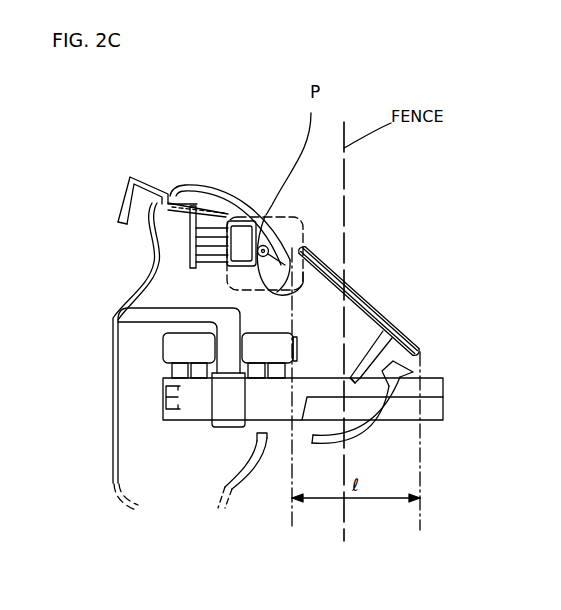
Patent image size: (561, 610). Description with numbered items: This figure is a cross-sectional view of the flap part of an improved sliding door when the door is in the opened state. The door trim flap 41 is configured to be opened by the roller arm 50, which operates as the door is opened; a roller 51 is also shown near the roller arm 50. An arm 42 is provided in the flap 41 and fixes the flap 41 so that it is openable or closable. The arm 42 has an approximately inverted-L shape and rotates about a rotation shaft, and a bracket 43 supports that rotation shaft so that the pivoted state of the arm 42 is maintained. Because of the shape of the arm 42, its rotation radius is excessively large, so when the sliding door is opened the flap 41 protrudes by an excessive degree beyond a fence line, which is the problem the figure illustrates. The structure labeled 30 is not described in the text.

The housing 30 is at (153, 318).
The door trim flap 41 is at (373, 302).
The arm 42 is at (343, 278).
The bracket 43 is at (243, 214).
The roller arm 50 is at (204, 398).
The roller 51 is at (172, 352).